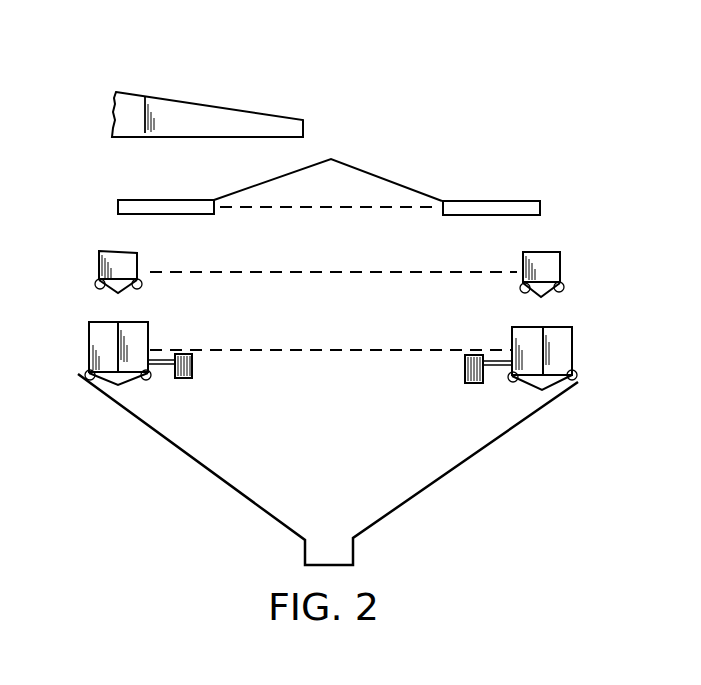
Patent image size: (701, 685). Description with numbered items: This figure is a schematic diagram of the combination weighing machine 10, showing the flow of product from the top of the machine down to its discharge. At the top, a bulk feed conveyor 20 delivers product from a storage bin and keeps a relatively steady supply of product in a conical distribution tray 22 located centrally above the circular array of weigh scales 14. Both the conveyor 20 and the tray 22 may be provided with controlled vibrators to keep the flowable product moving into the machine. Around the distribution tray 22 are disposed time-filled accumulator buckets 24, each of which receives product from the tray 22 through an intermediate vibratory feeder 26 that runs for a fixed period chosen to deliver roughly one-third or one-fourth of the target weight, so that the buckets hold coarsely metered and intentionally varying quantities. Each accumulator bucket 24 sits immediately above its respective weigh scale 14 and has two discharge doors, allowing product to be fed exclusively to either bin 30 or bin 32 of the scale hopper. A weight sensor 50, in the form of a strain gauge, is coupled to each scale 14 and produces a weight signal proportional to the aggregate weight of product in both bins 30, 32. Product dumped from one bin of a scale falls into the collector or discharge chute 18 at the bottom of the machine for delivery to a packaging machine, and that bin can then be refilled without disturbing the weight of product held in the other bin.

The combination weighing machine 10 is at (445, 120).
The bulk feed conveyor 20 is at (210, 105).
The conical distribution tray 22 is at (357, 172).
The vibratory feeder 26 is at (153, 200).
The accumulator bucket 24 is at (99, 258).
The bin 32 is at (100, 343).
The weigh scale 14 is at (158, 336).
The bin 30 is at (126, 370).
The weight sensor 50 is at (192, 366).
The collector or discharge chute 18 is at (198, 465).